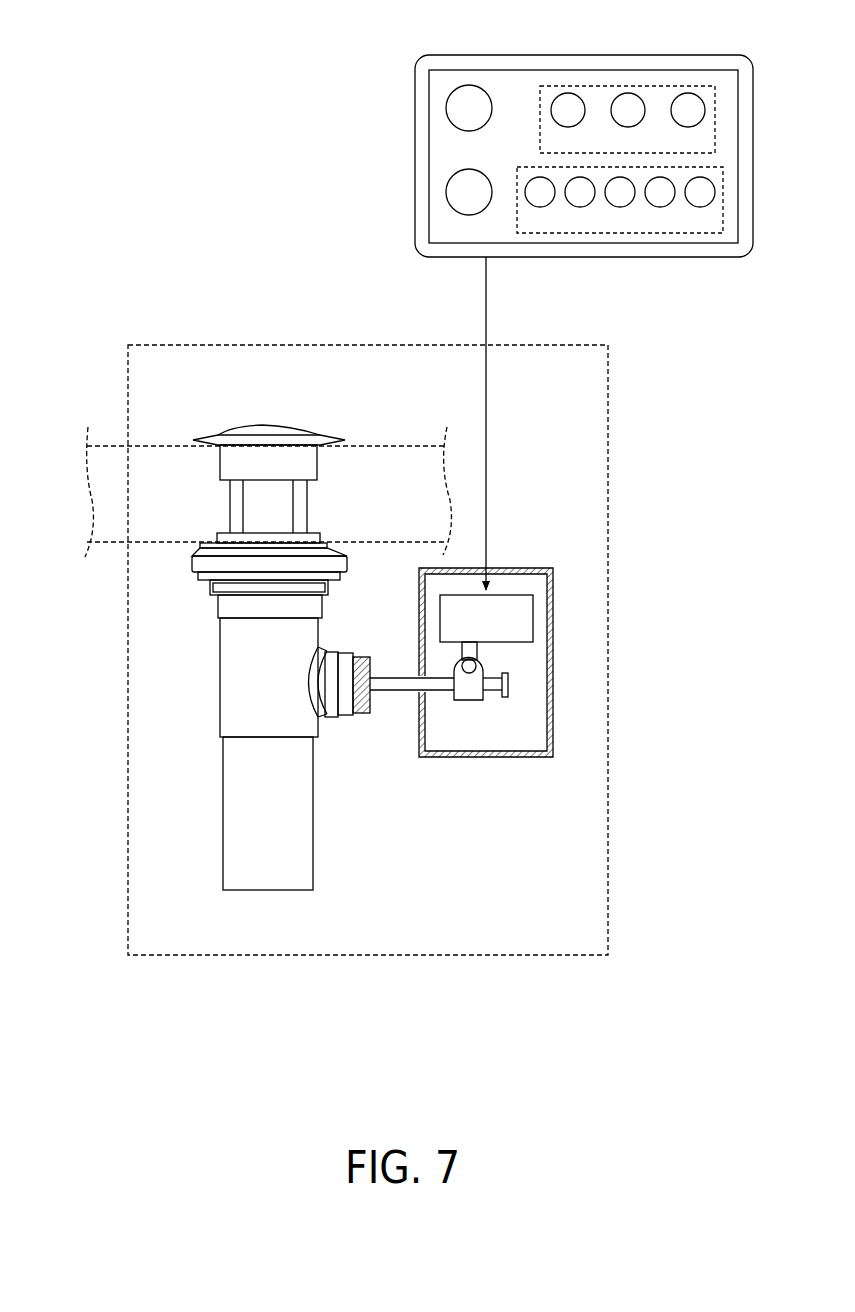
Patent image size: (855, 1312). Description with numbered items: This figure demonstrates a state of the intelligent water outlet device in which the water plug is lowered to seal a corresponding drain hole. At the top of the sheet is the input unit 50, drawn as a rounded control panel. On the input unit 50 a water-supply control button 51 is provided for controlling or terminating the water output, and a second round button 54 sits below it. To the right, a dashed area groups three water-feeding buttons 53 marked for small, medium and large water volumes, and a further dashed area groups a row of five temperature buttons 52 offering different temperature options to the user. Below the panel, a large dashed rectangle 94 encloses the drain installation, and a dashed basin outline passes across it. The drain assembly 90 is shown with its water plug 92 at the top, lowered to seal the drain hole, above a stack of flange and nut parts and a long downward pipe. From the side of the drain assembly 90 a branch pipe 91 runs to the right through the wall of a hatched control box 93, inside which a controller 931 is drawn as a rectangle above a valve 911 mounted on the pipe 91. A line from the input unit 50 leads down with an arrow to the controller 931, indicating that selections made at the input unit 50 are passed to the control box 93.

The input unit 50 is at (522, 88).
The water-supply control button 51 is at (469, 86).
The temperature buttons 52 is at (635, 233).
The water-feeding buttons 53 is at (635, 85).
The function button 54 is at (446, 195).
The drain assembly 90 is at (216, 588).
The water pipe 91 is at (395, 683).
The valve 911 is at (482, 663).
The drain stopper cap 92 is at (270, 427).
The control box 93 is at (480, 630).
The controller 931 is at (463, 660).
The sink cabinet 94 is at (160, 453).